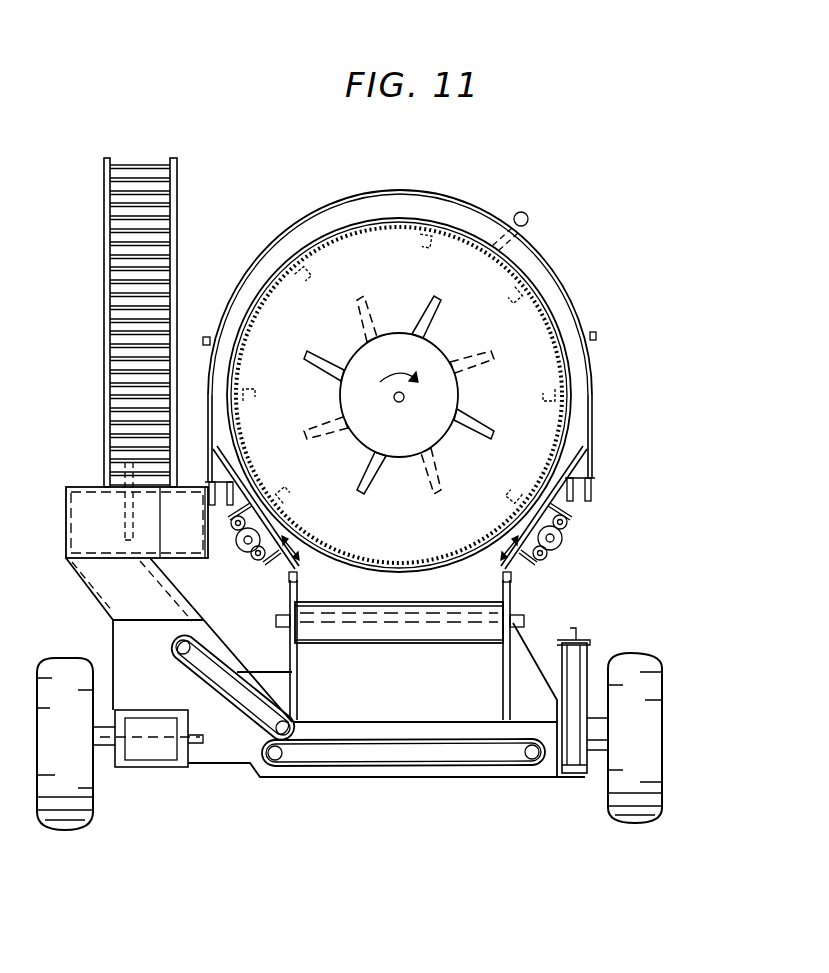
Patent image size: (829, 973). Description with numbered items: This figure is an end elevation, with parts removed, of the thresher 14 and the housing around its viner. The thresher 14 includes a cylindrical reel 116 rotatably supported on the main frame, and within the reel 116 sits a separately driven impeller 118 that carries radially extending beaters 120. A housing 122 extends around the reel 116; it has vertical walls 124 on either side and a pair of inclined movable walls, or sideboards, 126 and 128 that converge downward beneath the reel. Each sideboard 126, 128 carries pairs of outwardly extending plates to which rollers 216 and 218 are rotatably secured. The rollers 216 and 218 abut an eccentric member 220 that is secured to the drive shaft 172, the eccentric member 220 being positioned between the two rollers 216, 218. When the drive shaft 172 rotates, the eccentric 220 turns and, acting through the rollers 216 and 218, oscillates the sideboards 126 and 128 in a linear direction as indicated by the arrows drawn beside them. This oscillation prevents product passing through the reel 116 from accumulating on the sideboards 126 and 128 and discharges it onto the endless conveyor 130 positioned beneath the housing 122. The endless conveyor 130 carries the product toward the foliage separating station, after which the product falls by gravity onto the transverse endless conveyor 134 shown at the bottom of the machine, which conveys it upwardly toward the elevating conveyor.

The thresher 14 is at (398, 183).
The cylindrical reel 116 is at (453, 238).
The impeller 118 is at (385, 326).
The beaters 120 is at (437, 312).
The housing 122 is at (546, 252).
The vertical walls 124 is at (208, 367).
The inclined movable wall (sideboard) 126 is at (540, 480).
The inclined movable wall (sideboard) 128 is at (281, 562).
The endless conveyor 130 is at (480, 601).
The transverse endless conveyor 134 is at (388, 740).
The drive shaft 172 is at (546, 558).
The roller 216 is at (567, 522).
The roller 218 is at (544, 520).
The eccentric member 220 is at (561, 541).